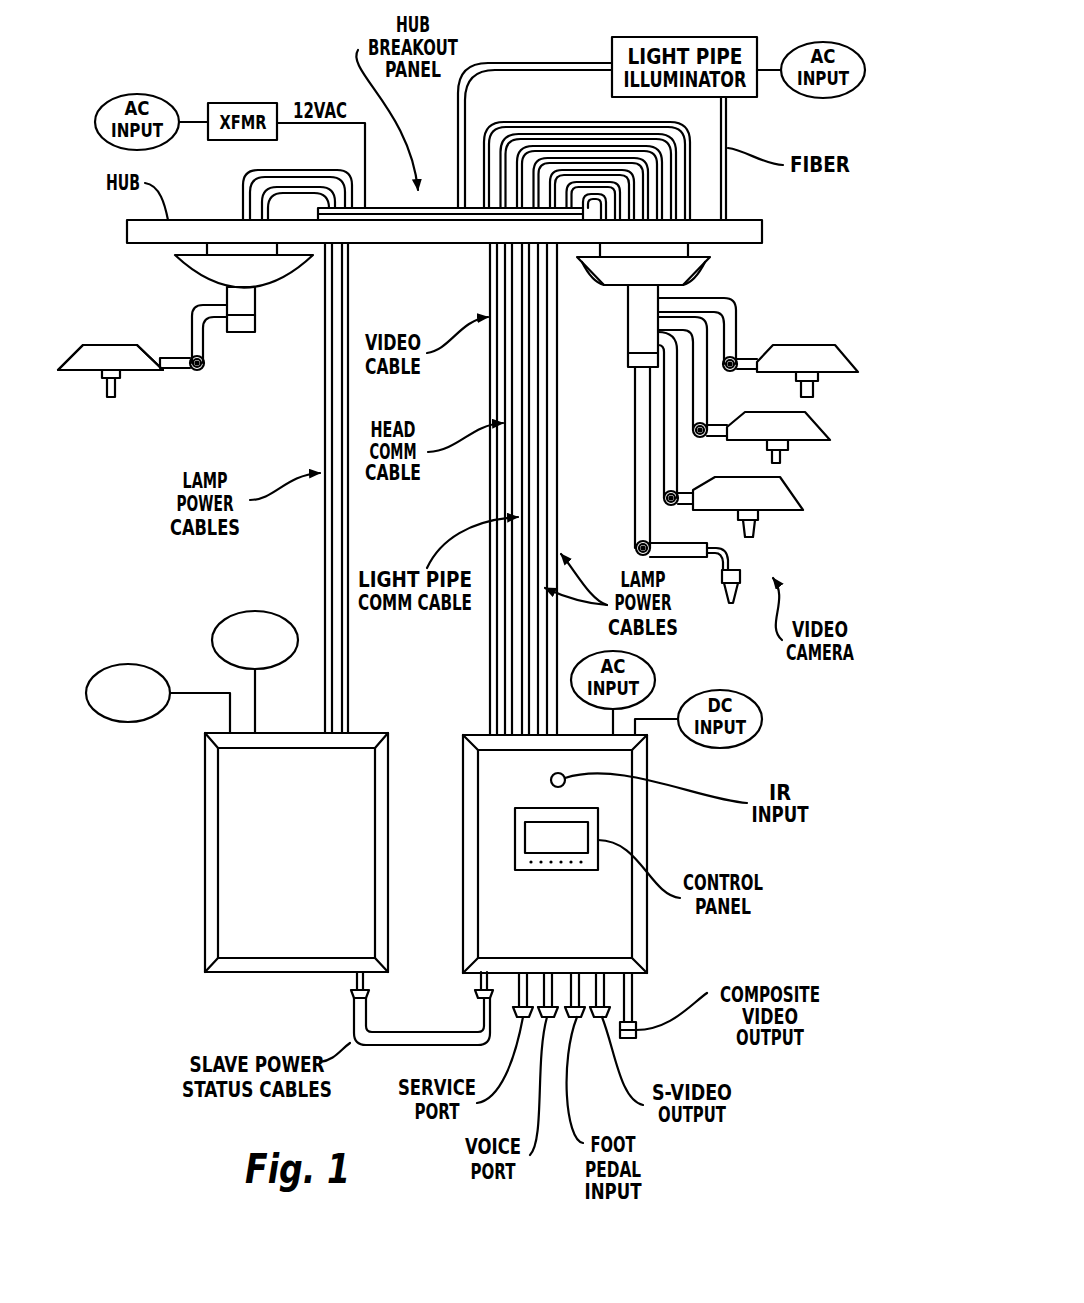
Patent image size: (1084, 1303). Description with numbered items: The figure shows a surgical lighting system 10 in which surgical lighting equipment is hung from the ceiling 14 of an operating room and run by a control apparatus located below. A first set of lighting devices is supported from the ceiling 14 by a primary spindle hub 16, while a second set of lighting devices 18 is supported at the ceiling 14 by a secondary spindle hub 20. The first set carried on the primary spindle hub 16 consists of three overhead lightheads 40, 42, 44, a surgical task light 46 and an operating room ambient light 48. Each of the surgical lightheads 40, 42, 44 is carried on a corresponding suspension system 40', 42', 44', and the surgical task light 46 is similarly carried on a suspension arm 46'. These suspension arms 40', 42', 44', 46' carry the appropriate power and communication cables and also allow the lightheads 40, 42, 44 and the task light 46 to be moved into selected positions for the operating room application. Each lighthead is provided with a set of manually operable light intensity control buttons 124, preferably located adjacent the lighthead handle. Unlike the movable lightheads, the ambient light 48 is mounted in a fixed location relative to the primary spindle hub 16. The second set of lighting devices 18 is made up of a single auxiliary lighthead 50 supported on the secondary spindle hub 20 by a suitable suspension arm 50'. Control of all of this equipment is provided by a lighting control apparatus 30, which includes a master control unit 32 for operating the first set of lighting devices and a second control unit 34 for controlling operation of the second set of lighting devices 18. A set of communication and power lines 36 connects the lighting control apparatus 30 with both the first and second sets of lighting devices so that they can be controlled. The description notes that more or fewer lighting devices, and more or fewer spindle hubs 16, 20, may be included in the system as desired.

The surgical lighting system 10 is at (125, 823).
The ceiling 14 is at (745, 238).
The primary spindle hub 16 is at (628, 360).
The second set of lighting devices 18 is at (95, 407).
The secondary spindle hub 20 is at (260, 297).
The lighting control apparatus 30 is at (183, 947).
The master control unit 32 is at (555, 854).
The second control unit 34 is at (296, 852).
The communication and power lines 36 is at (475, 640).
The overhead lighthead 40 is at (798, 322).
The suspension system 40' is at (731, 328).
The overhead lighthead 42 is at (787, 460).
The suspension system 42' is at (708, 377).
The overhead lighthead 44 is at (770, 517).
The suspension system 44' is at (692, 418).
The surgical task light 46 is at (731, 607).
The suspension arm 46' is at (654, 468).
The operating room ambient light 48 is at (705, 278).
The auxiliary lighthead 50 is at (110, 331).
The suspension arm 50' is at (227, 352).
The light intensity control buttons 124 is at (123, 378).